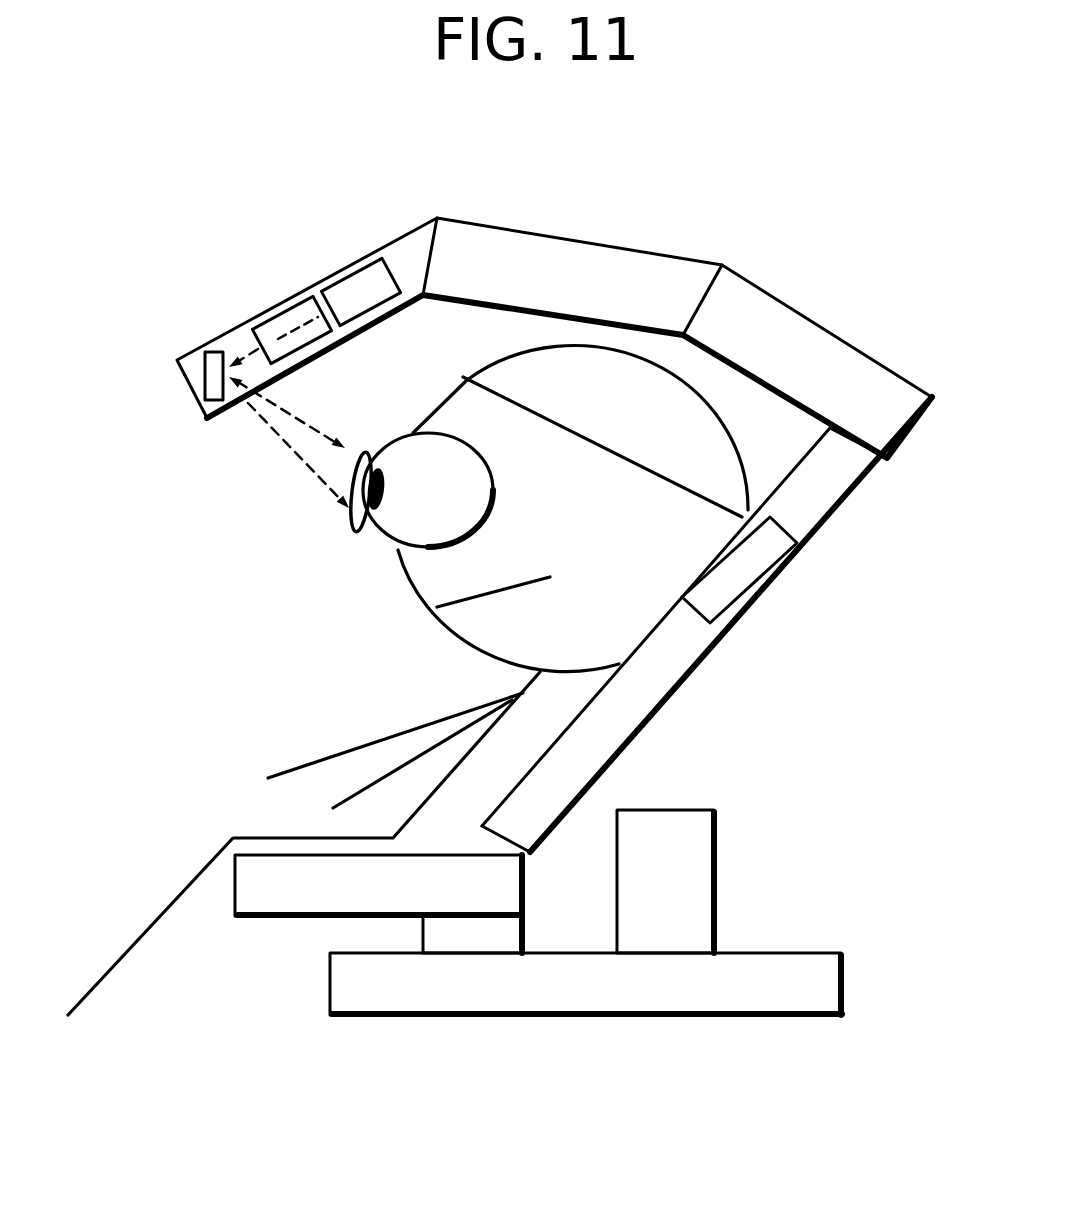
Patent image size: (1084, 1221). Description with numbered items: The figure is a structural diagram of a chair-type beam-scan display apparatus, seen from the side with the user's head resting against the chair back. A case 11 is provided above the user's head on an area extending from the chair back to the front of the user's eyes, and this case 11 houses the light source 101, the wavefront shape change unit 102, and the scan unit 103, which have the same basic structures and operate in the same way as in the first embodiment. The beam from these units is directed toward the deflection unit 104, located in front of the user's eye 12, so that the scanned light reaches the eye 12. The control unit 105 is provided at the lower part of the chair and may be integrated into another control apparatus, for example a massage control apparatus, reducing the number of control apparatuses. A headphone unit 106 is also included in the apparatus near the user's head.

The case 11 is at (381, 240).
The eye to be examined 12 is at (340, 465).
The light source 101 is at (360, 290).
The wavefront shape change unit 102 is at (283, 322).
The scan unit 103 is at (207, 370).
The deflection unit 104 is at (353, 485).
The control unit 105 is at (700, 808).
The headphone unit 106 is at (745, 568).